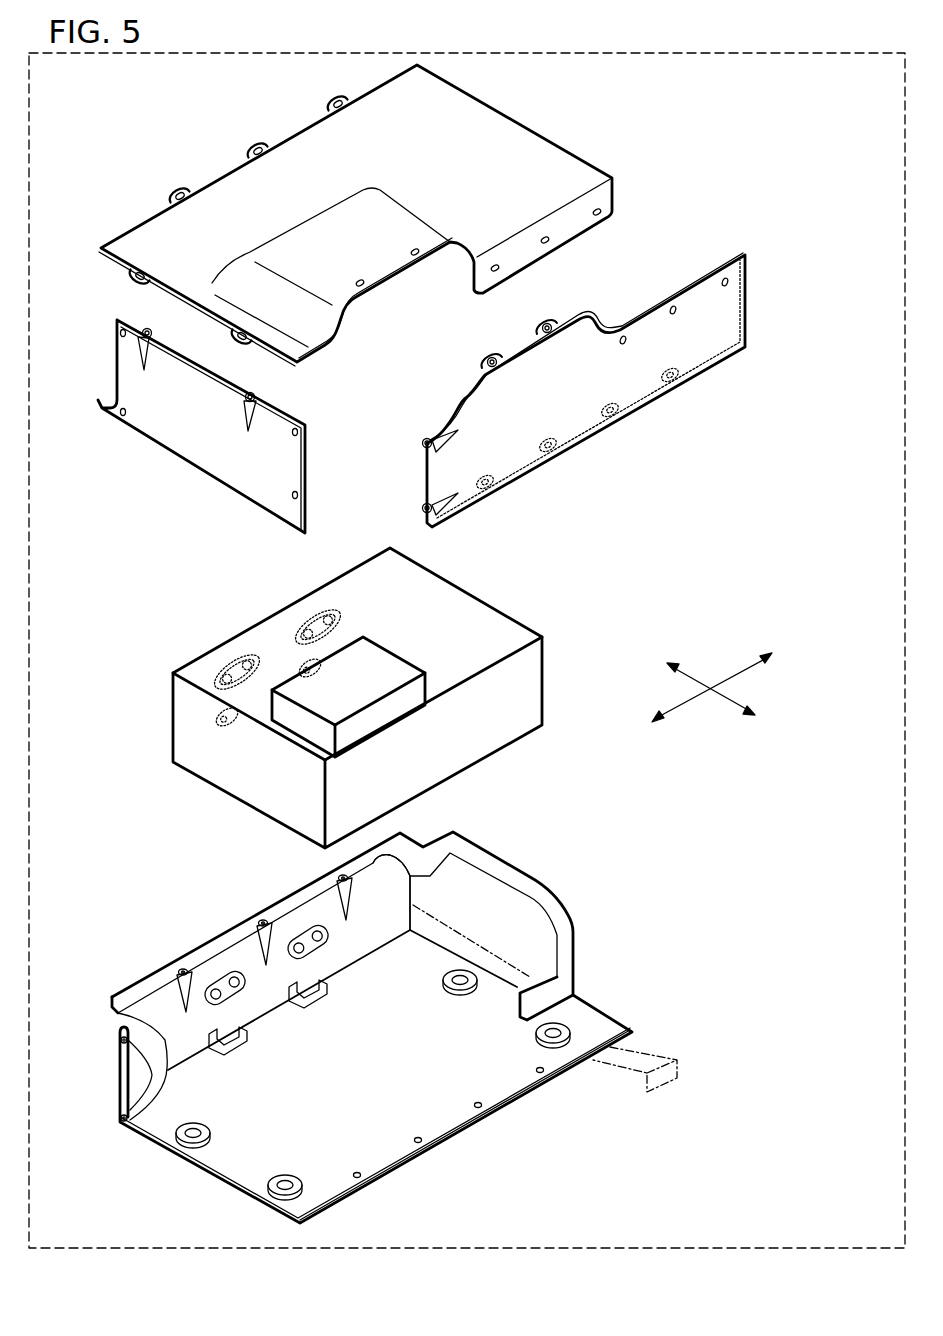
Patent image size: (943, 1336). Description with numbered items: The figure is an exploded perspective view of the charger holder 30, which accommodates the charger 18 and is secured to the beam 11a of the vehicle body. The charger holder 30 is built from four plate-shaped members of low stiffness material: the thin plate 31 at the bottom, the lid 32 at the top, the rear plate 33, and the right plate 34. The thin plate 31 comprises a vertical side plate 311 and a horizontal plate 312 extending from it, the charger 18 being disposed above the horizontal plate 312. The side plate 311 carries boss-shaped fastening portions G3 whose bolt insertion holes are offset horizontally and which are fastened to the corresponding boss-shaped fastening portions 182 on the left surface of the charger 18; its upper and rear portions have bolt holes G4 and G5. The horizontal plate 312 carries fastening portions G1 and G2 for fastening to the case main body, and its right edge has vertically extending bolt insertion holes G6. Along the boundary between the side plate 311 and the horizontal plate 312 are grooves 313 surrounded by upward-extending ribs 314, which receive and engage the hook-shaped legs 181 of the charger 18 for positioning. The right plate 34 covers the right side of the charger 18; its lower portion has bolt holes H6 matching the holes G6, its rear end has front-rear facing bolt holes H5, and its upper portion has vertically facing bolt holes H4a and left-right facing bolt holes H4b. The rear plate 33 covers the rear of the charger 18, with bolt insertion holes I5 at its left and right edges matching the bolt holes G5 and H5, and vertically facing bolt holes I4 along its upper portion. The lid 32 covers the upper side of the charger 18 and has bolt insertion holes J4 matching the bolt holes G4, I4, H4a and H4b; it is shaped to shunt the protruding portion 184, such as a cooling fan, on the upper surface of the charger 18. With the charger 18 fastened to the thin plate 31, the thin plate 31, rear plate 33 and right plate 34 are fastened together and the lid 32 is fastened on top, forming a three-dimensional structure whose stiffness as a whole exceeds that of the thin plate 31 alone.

The charger holder 30 is at (103, 122).
The lid 32 is at (475, 135).
The rear plate 33 is at (128, 373).
The right plate 34 is at (580, 405).
The charger 18 is at (518, 637).
The legs 181 is at (220, 660).
The fastening portions 182 is at (268, 628).
The protruding portion 184 is at (395, 673).
The thin plate 31 is at (522, 847).
The side plate 311 is at (383, 900).
The horizontal plate 312 is at (375, 1132).
The grooves 313 is at (240, 950).
The ribs 314 is at (315, 1043).
The beam 11a is at (663, 1082).
The bolt insertion holes J4 is at (336, 100).
The bolt holes I4 is at (151, 331).
The bolt insertion holes I5 is at (185, 432).
The bolt holes H4a is at (490, 333).
The bolt holes H4b is at (679, 286).
The bolt holes H5 is at (423, 506).
The bolt holes H6 is at (603, 440).
The fastening portion G1 is at (535, 986).
The fastening portion G2 is at (228, 1179).
The fastening portions G3 is at (262, 935).
The bolt holes G4 is at (250, 930).
The bolt holes G5 is at (98, 1088).
The bolt insertion holes G6 is at (468, 1149).